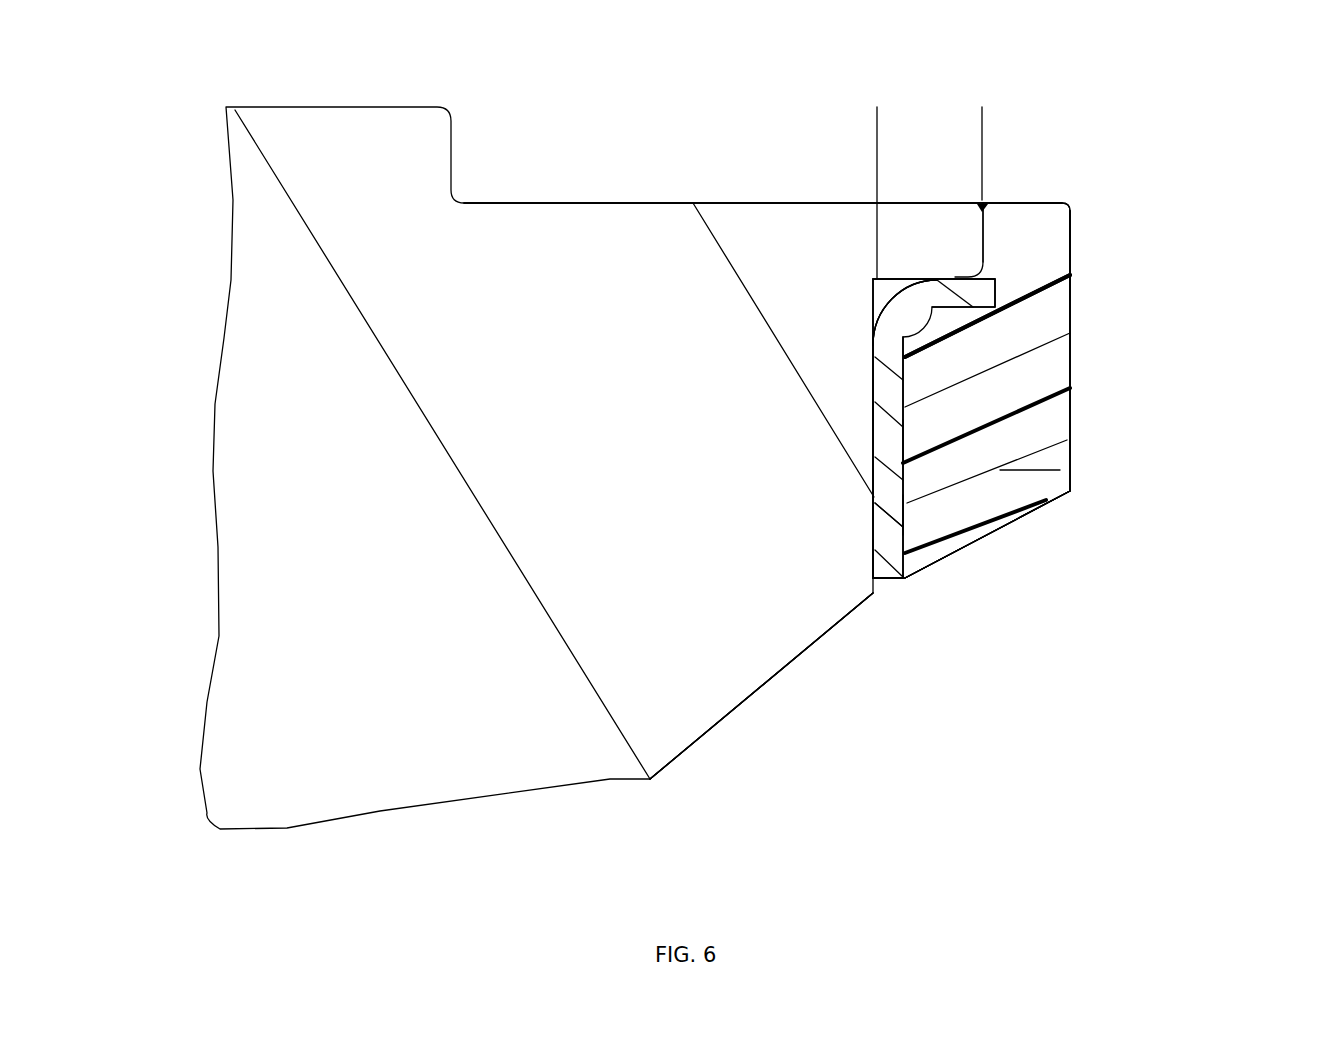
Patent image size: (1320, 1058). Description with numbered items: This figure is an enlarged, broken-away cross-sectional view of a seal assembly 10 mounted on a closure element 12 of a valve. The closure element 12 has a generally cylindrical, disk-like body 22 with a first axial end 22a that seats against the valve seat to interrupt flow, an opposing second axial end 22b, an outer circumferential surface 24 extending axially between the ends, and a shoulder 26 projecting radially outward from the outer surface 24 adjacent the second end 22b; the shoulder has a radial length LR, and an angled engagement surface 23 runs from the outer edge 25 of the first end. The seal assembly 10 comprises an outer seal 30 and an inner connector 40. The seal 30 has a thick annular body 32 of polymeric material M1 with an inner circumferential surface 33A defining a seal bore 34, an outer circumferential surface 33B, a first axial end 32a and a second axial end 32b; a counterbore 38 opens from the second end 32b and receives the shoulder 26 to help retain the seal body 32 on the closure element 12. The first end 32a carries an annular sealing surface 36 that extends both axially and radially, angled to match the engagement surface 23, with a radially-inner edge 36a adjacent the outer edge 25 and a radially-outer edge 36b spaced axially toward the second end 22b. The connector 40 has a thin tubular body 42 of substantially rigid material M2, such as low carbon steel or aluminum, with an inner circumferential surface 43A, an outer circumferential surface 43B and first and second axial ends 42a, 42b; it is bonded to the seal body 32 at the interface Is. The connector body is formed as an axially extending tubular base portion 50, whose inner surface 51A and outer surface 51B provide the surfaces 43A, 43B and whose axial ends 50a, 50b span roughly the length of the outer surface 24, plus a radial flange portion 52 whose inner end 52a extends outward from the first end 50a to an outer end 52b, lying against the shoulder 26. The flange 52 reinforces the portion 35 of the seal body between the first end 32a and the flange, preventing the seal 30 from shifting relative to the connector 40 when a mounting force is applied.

The seal assembly 10 is at (1182, 340).
The closure element 12 is at (601, 100).
The closure element body 22 is at (673, 187).
The first axial end 22a is at (700, 740).
The second axial end 22b is at (768, 203).
The engagement surface 23 is at (783, 674).
The outer circumferential surface 24 is at (882, 402).
The outer edge 25 is at (891, 598).
The shoulder 26 is at (968, 223).
The outer seal 30 is at (1102, 418).
The seal body 32 is at (1078, 300).
The seal body first axial end 32a is at (983, 538).
The seal body second axial end 32b is at (1023, 203).
The inner circumferential surface 33A is at (872, 492).
The outer circumferential surface 33B is at (1072, 245).
The seal bore 34 is at (875, 555).
The seal body portion 35 is at (960, 452).
The sealing surface 36 is at (1022, 532).
The radially-inner edge 36a is at (906, 579).
The radially-outer edge 36b is at (1072, 492).
The counterbore 38 is at (983, 240).
The inner connector 40 is at (855, 442).
The connector body 42 is at (866, 362).
The connector body first axial end 42a is at (896, 590).
The connector body second axial end 42b is at (934, 274).
The connector inner circumferential surface 43A is at (867, 392).
The connector outer circumferential surface 43B is at (908, 437).
The tubular base portion 50 is at (866, 503).
The base portion first axial end 50a is at (904, 579).
The base portion second axial end 50b is at (880, 337).
The base portion inner surface 51A is at (873, 413).
The base portion outer circumferential surface 51B is at (903, 515).
The radial flange portion 52 is at (987, 283).
The flange inner radial end 52a is at (893, 313).
The flange outer radial end 52b is at (998, 297).
The polymeric material M1 is at (1028, 482).
The substantially rigid material M2 is at (887, 528).
The interface Is is at (905, 378).
The radial length LR is at (982, 132).